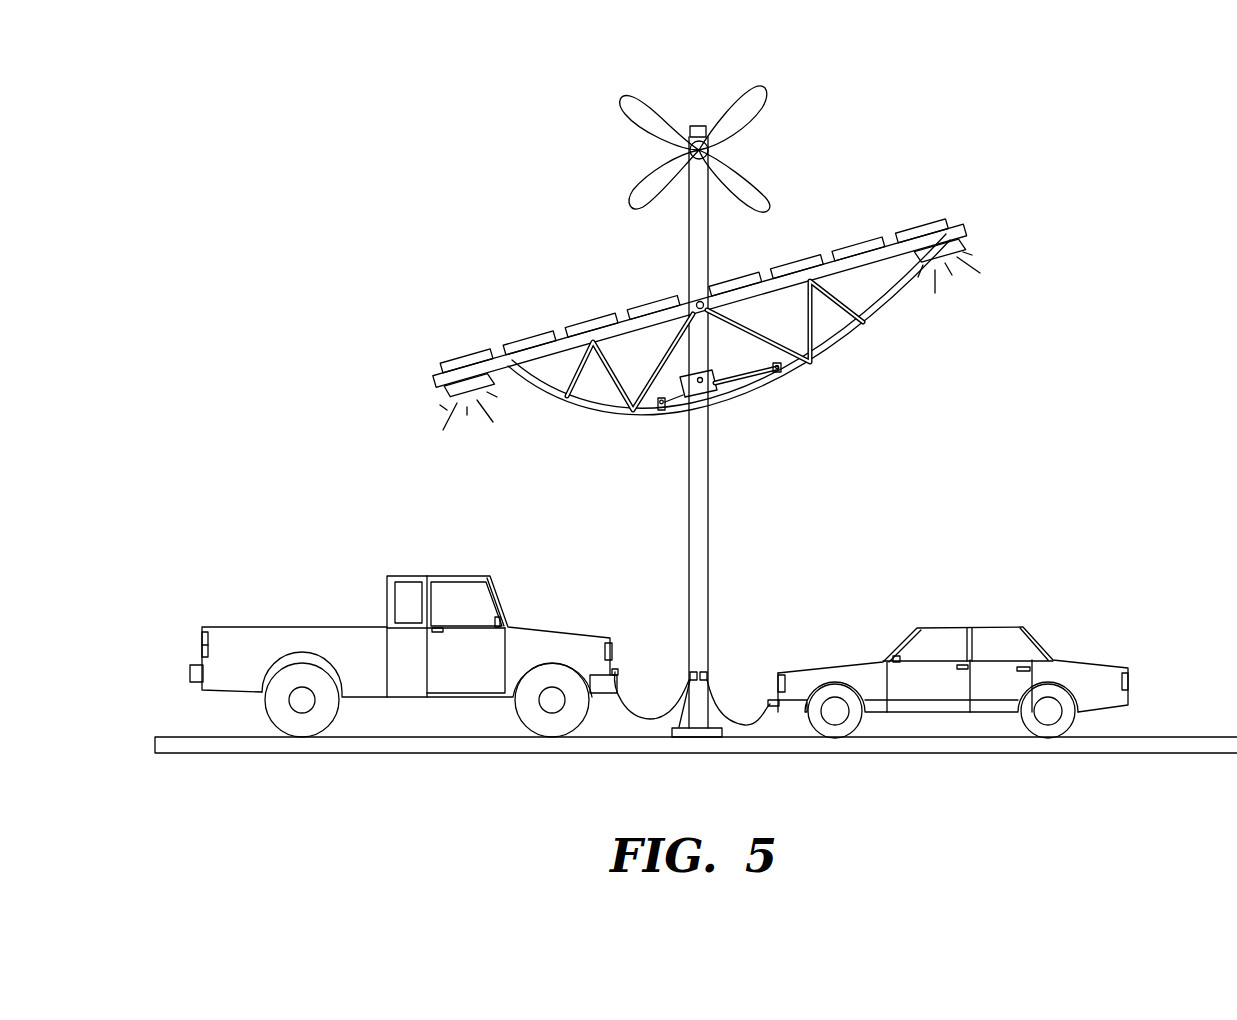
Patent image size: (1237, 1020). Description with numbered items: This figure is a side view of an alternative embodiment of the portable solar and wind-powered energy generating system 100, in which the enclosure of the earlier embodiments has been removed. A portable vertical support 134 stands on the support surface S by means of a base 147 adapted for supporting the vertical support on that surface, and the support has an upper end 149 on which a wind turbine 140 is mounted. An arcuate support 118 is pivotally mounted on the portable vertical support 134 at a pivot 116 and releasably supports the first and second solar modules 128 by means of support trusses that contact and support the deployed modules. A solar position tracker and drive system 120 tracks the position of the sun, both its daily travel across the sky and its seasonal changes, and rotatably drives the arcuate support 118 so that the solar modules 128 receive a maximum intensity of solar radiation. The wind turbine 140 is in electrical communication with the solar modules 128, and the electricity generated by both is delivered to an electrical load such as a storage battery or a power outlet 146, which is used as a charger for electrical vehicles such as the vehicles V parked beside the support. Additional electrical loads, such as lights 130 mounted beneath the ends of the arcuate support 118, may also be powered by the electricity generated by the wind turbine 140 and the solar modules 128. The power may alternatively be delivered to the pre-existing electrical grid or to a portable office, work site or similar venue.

The system 100 is at (314, 160).
The pivot joint 116 is at (692, 292).
The arcuate support 118 is at (827, 352).
The solar position tracker and drive system 120 is at (712, 392).
The first solar module 128 is at (510, 302).
The lights 130 is at (441, 388).
The portable vertical support 134 is at (708, 538).
The wind turbine 140 is at (778, 100).
The power outlet 146 is at (730, 660).
The base 147 is at (678, 706).
The upper end 149 is at (698, 124).
The vehicle V is at (1070, 577).
The support surface S is at (1193, 740).